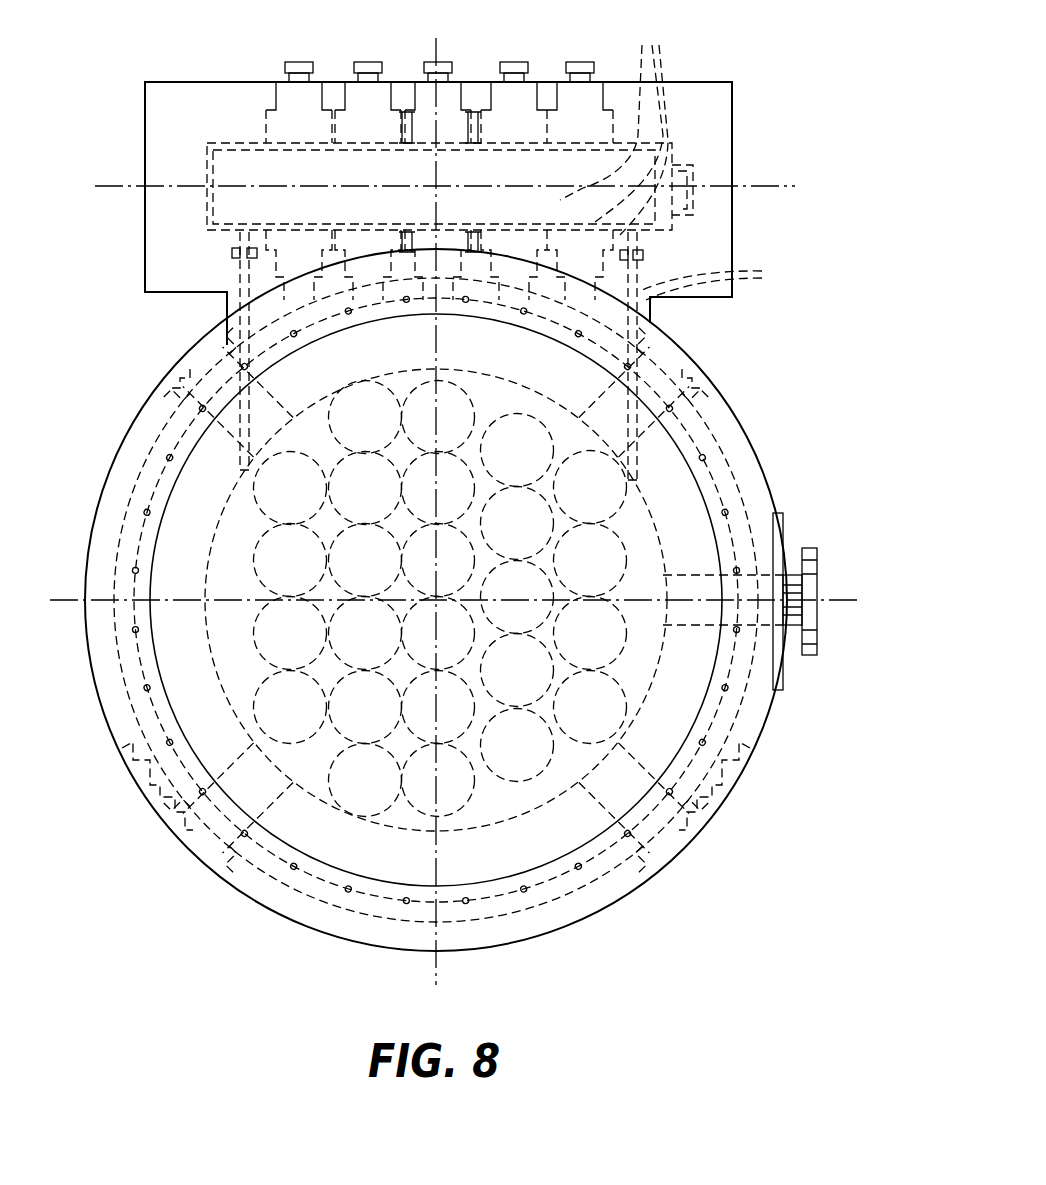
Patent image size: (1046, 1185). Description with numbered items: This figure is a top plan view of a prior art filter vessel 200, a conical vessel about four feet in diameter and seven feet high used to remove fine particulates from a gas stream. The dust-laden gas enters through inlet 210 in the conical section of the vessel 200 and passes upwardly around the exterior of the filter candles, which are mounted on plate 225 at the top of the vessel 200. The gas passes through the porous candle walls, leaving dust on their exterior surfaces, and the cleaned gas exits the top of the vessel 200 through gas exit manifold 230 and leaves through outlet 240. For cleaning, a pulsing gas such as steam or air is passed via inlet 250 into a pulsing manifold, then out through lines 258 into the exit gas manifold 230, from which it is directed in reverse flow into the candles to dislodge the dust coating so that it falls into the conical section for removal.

The conical vessel 200 is at (915, 443).
The inlet 210 is at (820, 622).
The plate 225 is at (617, 119).
The gas exit manifold 230 is at (680, 487).
The outlet 240 is at (158, 388).
The inlet 250 is at (693, 165).
The lines 258 is at (729, 277).